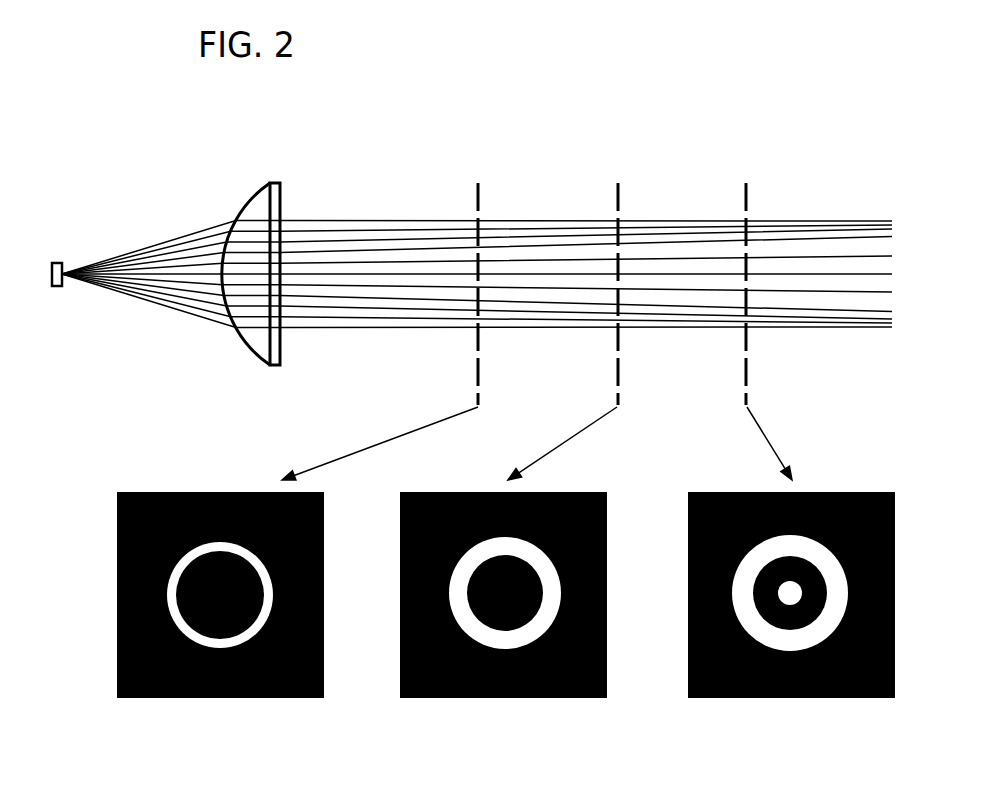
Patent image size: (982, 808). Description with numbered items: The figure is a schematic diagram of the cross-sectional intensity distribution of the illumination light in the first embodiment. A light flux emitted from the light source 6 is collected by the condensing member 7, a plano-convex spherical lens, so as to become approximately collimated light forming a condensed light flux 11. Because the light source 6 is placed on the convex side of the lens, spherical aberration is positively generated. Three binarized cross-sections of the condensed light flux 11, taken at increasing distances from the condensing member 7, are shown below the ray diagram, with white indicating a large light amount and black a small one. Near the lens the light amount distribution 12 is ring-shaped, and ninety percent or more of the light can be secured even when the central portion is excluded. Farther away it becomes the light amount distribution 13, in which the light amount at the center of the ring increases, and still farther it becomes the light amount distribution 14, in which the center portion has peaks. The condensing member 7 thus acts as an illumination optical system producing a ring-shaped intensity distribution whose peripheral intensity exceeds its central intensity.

The light source 6 is at (55, 288).
The condensing member 7 is at (243, 343).
The condensed light flux 11 is at (110, 258).
The light amount distribution 12 is at (167, 700).
The light amount distribution 13 is at (453, 700).
The light amount distribution 14 is at (725, 700).